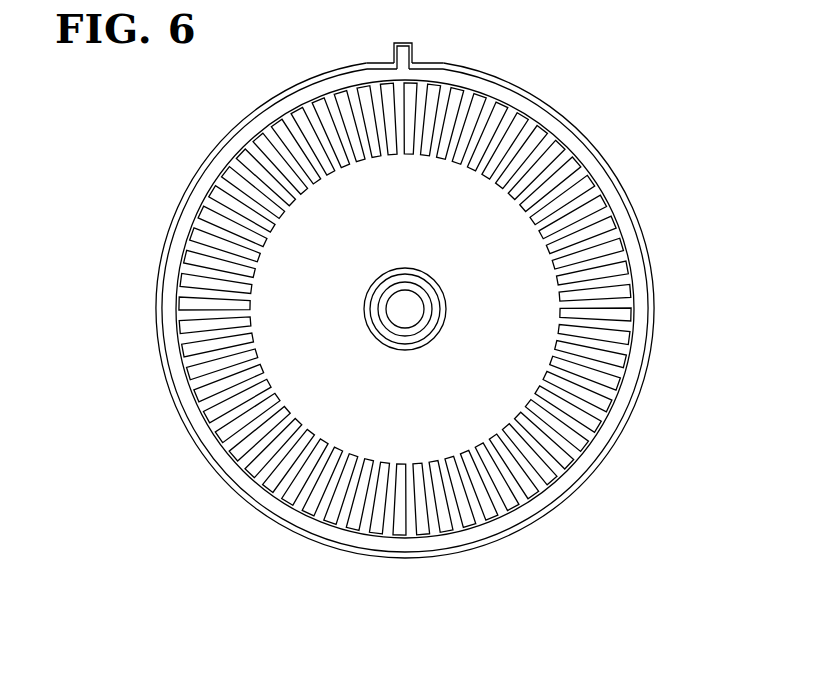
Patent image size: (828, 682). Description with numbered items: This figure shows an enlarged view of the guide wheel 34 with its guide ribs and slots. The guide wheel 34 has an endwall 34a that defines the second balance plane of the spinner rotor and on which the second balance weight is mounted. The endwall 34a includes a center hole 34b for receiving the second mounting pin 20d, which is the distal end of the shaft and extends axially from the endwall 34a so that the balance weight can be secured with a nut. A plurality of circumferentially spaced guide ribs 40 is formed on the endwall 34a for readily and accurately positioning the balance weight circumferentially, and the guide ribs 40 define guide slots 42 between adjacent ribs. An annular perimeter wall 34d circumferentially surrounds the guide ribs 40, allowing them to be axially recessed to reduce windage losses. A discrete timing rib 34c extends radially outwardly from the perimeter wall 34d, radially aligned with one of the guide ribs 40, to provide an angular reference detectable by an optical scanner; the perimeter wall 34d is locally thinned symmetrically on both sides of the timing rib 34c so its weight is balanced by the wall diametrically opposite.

The guide wheel 34 is at (593, 141).
The endwall 34a is at (350, 228).
The center hole 34b is at (364, 303).
The timing rib 34c is at (406, 44).
The annular perimeter wall 34d is at (628, 410).
The guide ribs 40 is at (550, 232).
The guide slots 42 is at (482, 163).
The second mounting pin 20d is at (403, 318).